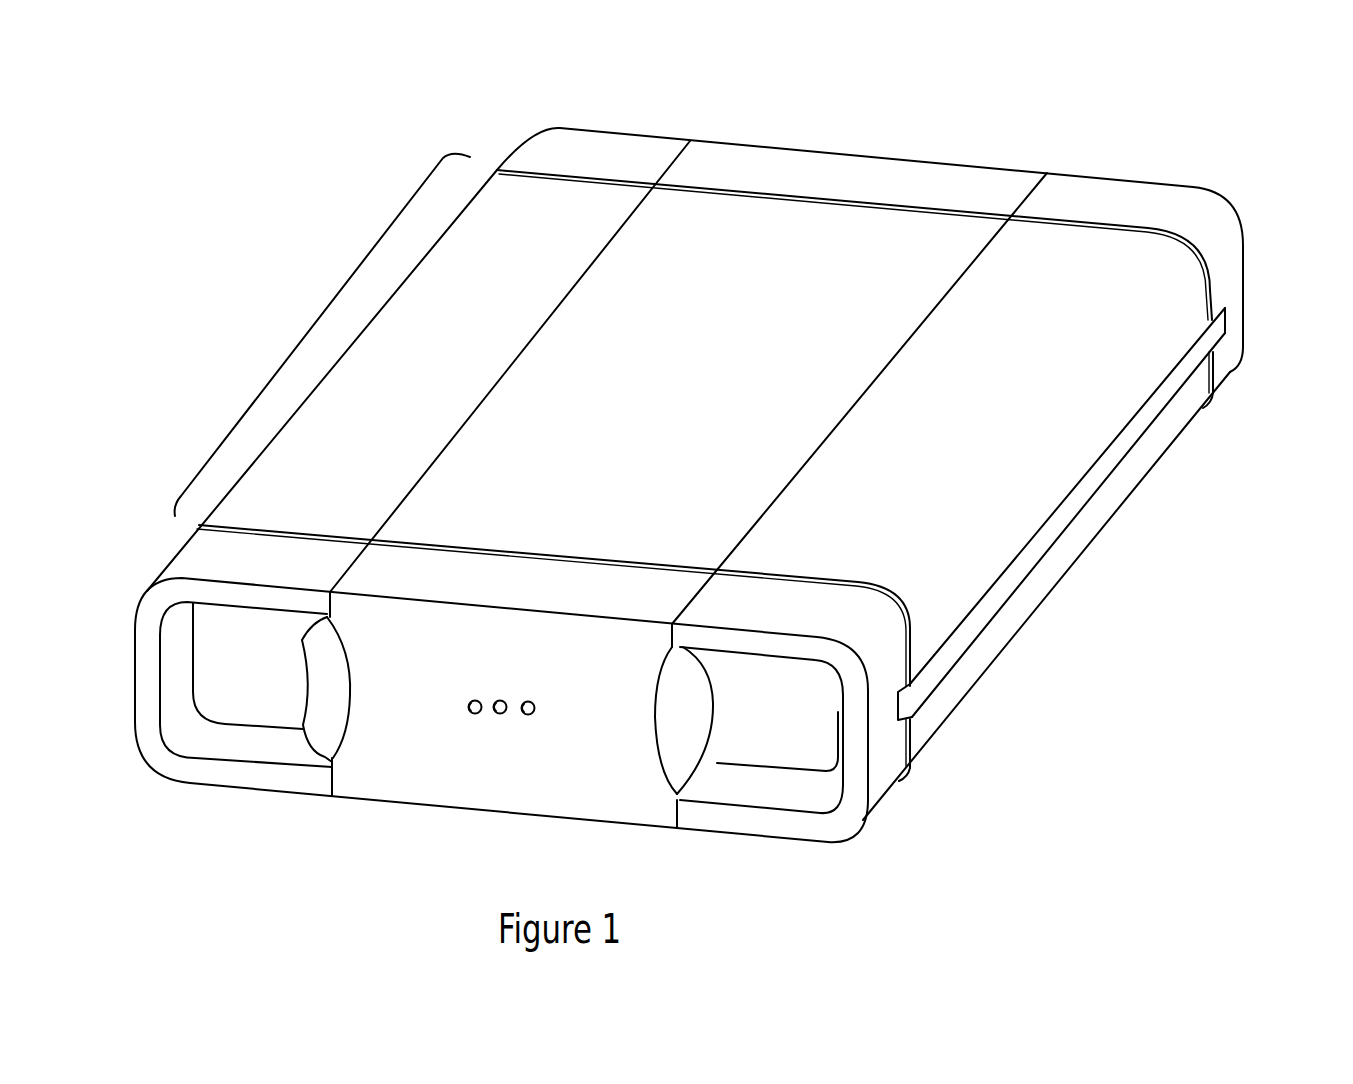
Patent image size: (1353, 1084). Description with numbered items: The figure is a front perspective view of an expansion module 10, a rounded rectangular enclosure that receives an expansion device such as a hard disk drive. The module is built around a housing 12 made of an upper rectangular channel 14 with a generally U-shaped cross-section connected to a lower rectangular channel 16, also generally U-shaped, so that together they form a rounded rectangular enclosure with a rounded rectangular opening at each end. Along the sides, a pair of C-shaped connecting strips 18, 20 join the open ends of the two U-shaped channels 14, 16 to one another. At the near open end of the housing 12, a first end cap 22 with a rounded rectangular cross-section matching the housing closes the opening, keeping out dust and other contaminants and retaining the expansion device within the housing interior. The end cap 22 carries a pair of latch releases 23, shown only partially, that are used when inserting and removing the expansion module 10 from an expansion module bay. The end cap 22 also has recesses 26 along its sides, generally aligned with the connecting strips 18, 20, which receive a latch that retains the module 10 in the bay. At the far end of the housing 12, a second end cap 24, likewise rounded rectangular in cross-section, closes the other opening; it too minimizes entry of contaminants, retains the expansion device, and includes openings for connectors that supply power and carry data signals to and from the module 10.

The expansion module 10 is at (254, 188).
The housing 12 is at (313, 322).
The upper rectangular channel 14 is at (1037, 457).
The lower rectangular channel 16 is at (1037, 593).
The C-shaped connecting strip 18 is at (968, 633).
The C-shaped connecting strip 20 is at (133, 645).
The first end cap 22 is at (860, 823).
The latch release 23 is at (322, 732).
The second end cap 24 is at (1225, 256).
The recess 26 is at (912, 713).